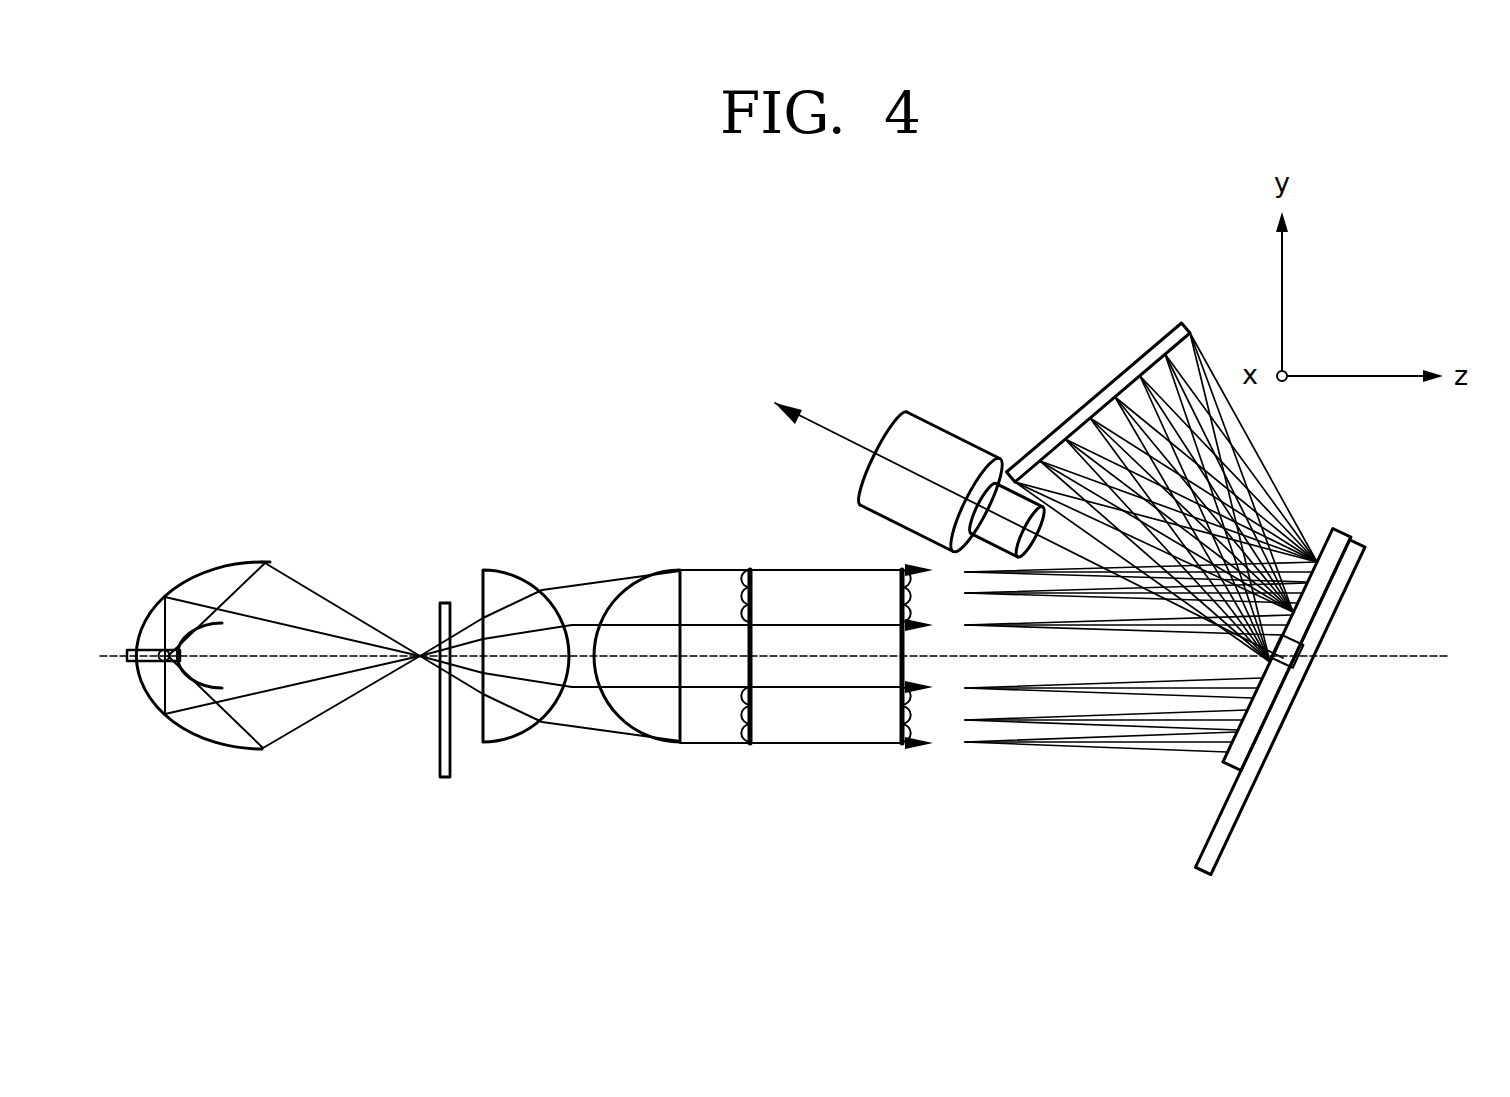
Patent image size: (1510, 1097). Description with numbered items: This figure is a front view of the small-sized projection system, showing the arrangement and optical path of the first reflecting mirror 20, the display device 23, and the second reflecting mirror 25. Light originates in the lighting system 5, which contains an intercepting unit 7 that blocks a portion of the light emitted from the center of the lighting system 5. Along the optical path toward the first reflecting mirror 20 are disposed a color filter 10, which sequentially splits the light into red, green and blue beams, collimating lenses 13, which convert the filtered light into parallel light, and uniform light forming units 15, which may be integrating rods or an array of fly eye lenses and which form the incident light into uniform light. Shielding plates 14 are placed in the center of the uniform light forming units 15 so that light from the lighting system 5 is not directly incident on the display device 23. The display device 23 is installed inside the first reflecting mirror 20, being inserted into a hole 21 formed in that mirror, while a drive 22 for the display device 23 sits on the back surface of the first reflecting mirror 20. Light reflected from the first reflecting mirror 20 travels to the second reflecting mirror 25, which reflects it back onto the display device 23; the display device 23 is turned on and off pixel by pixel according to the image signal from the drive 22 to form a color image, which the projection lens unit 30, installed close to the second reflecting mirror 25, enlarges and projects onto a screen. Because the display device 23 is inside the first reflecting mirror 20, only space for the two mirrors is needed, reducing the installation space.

The lighting system 5 is at (182, 583).
The intercepting unit 7 is at (202, 688).
The color filter 10 is at (443, 602).
The collimating lenses 13 is at (623, 727).
The shielding plates 14 is at (745, 673).
The uniform light forming units 15 is at (750, 745).
The first reflecting mirror 20 is at (1228, 768).
The hole 21 is at (1303, 716).
The drive 22 is at (1220, 840).
The display device 23 is at (1290, 672).
The second reflecting mirror 25 is at (1140, 363).
The projection lens unit 30 is at (952, 427).